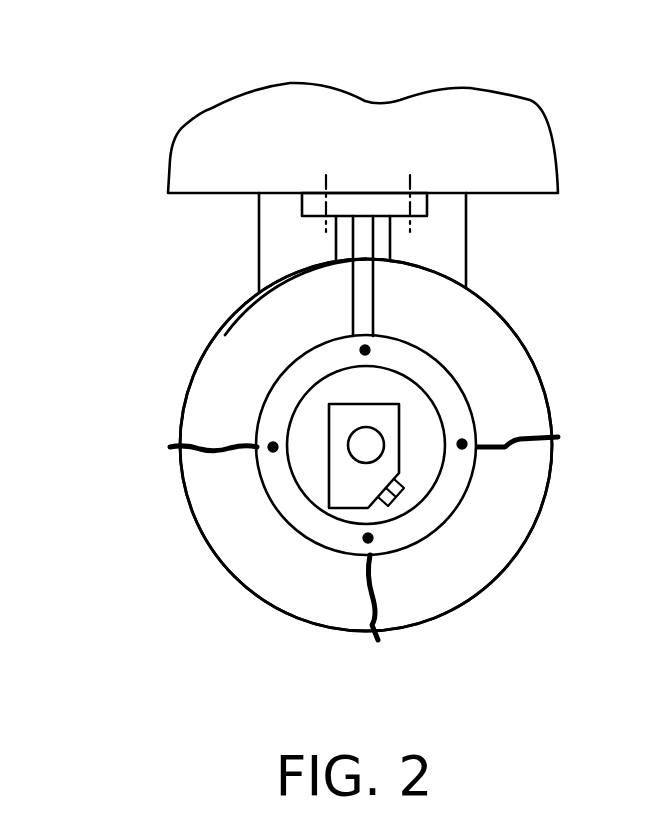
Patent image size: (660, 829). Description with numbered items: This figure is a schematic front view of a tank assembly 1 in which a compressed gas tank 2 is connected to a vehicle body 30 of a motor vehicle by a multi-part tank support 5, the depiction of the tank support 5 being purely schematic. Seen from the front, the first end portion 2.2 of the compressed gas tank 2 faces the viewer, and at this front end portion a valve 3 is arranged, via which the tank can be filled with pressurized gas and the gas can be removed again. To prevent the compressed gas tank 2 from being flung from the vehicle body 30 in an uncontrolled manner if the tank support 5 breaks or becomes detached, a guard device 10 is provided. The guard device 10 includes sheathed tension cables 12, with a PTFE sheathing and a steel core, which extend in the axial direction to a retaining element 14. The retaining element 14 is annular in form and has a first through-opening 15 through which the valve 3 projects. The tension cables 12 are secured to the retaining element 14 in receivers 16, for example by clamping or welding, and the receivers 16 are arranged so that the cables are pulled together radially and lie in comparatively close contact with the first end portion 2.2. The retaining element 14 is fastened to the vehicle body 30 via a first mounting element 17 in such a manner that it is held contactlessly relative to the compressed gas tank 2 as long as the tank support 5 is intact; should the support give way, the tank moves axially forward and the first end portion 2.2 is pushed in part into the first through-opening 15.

The tank assembly 1 is at (499, 148).
The compressed gas tank 2 is at (470, 318).
The first end portion 2.2 is at (220, 332).
The valve 3 is at (367, 404).
The tank support 5 is at (276, 251).
The guard device 10 is at (498, 598).
The tension cables 12 is at (200, 447).
The retaining element 14 is at (448, 387).
The first through-opening 15 is at (295, 427).
The receivers 16 is at (358, 347).
The first mounting element 17 is at (372, 275).
The vehicle body 30 is at (351, 150).